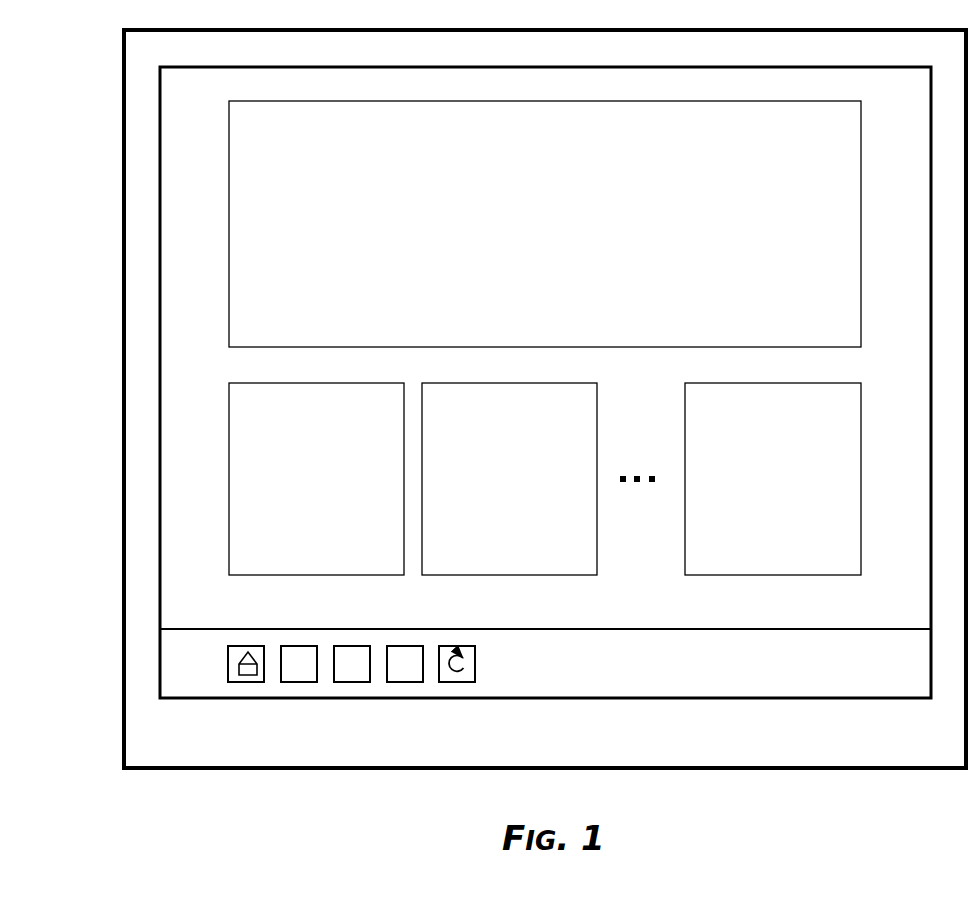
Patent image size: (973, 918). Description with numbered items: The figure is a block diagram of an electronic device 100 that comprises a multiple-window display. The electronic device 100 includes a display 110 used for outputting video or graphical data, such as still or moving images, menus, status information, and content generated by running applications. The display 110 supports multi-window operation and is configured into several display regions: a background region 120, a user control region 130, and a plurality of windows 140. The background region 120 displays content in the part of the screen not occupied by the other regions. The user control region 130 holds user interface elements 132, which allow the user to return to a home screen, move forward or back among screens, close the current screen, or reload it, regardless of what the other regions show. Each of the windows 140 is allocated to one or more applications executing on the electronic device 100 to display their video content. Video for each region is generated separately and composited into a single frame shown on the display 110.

The electronic device 100 is at (122, 68).
The display 110 is at (156, 215).
The background region 120 is at (459, 338).
The user control region 130 is at (492, 679).
The user interface elements 132 is at (248, 686).
The windows 140 is at (545, 338).